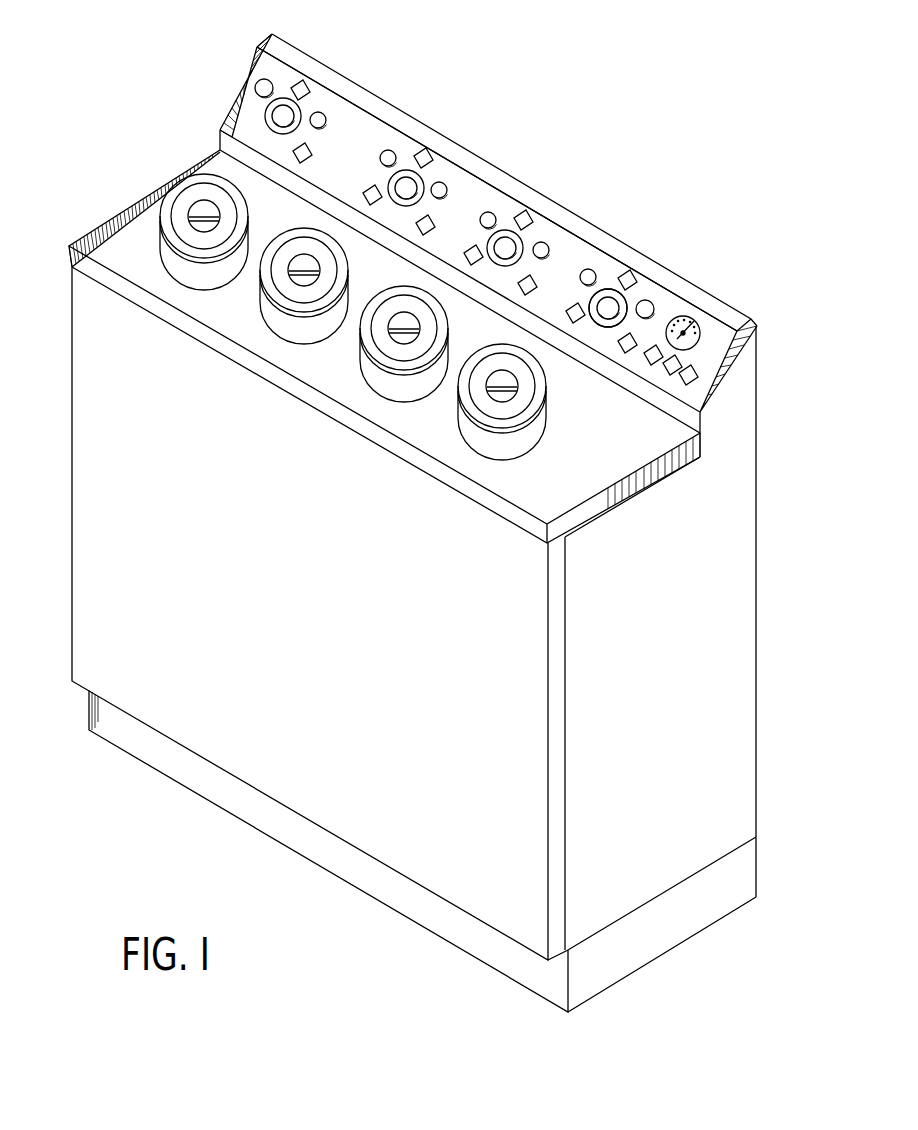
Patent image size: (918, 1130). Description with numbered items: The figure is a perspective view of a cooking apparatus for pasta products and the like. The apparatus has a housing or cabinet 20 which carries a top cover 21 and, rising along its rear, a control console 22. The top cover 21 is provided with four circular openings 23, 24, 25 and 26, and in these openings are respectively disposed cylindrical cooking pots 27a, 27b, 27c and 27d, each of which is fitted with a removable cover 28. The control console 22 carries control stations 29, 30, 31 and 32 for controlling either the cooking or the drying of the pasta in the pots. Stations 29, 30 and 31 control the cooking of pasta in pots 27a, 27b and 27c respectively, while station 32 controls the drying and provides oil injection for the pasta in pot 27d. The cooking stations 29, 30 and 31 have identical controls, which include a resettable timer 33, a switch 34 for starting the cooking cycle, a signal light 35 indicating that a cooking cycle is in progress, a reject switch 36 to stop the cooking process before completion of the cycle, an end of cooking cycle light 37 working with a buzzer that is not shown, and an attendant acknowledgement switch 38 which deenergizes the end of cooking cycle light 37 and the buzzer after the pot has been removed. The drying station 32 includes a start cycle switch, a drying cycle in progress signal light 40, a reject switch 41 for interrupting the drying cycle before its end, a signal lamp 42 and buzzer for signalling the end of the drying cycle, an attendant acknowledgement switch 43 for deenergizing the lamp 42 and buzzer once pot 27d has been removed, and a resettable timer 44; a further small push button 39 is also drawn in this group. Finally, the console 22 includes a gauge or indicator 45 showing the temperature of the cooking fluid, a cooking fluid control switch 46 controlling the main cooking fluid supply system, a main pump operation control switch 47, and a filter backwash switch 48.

The housing or cabinet 20 is at (758, 558).
The top cover 21 is at (82, 232).
The control console 22 is at (240, 86).
The circular opening 23 is at (222, 280).
The circular opening 24 is at (263, 292).
The circular opening 25 is at (443, 403).
The circular opening 26 is at (540, 440).
The cylindrical cooking pot 27a is at (185, 258).
The cylindrical cooking pot 27b is at (305, 325).
The cylindrical cooking pot 27c is at (395, 382).
The cylindrical cooking pot 27d is at (506, 440).
The removable cover 28 is at (330, 271).
The control station 29 is at (284, 73).
The control station 30 is at (406, 156).
The control station 31 is at (534, 232).
The control station 32 is at (636, 288).
The resettable timer 33 is at (507, 232).
The switch 34 is at (368, 191).
The signal light 35 is at (385, 156).
The reject switch 36 is at (433, 227).
The end of cooking cycle light 37 is at (440, 187).
The attendant acknowledgement switch 38 is at (423, 156).
The push button 39 is at (568, 313).
The drying cycle in progress signal light 40 is at (585, 275).
The reject switch 41 is at (633, 340).
The signal lamp 42 is at (650, 306).
The attendant acknowledgement switch 43 is at (627, 277).
The resettable timer 44 is at (600, 329).
The gauge or indicator 45 is at (692, 330).
The cooking fluid control switch 46 is at (648, 363).
The main pump operation control switch 47 is at (670, 367).
The filter backwash switch 48 is at (698, 380).